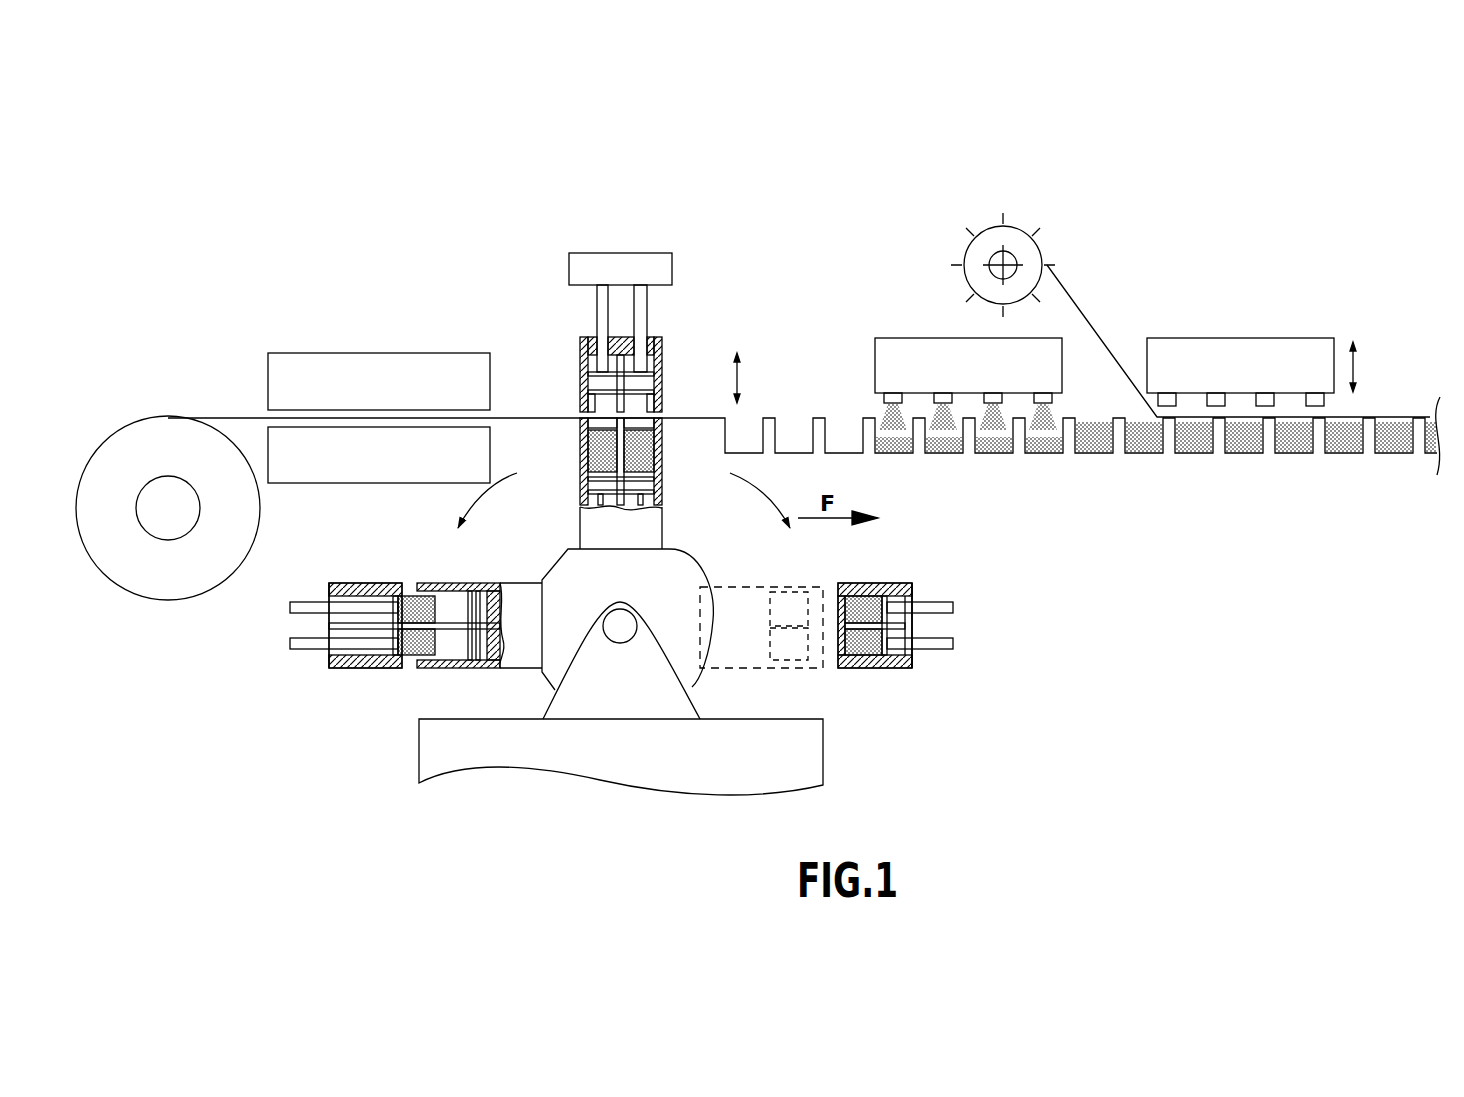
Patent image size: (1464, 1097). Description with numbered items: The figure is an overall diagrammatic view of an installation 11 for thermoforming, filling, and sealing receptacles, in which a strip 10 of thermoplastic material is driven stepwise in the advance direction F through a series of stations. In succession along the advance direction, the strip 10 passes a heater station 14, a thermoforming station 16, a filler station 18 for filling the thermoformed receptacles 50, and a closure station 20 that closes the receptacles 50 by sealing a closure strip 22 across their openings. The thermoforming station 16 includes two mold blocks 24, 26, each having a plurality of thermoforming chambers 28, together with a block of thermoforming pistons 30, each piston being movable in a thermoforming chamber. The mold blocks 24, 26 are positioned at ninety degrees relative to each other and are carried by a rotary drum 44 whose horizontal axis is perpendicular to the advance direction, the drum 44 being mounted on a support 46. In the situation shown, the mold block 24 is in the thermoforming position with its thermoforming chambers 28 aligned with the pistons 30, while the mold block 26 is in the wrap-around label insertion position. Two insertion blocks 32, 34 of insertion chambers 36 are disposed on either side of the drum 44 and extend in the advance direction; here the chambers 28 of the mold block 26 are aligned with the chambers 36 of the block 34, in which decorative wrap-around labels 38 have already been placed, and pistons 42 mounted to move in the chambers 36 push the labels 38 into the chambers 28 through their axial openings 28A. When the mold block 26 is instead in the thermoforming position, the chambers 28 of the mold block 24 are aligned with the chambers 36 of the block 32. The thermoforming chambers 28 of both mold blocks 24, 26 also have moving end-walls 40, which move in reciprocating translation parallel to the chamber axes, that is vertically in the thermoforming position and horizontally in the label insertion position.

The strip of thermoplastic material 10 is at (223, 417).
The packaging system 11 is at (530, 212).
The heater station 14 is at (340, 352).
The thermoforming station 16 is at (672, 253).
The filler station 18 is at (935, 338).
The closure station 20 is at (1232, 338).
The closure strip 22 is at (1087, 318).
The mold block 24 is at (655, 520).
The mold block 26 is at (528, 600).
The thermoforming chambers 28 is at (580, 430).
The axial openings 28A is at (664, 418).
The thermoforming pistons 30 is at (727, 333).
The insertion block 32 is at (905, 582).
The insertion block 34 is at (340, 582).
The insertion chambers 36 is at (352, 582).
The wrap-around labels 38 is at (578, 468).
The moving end-walls 40 is at (490, 668).
The pistons 42 is at (290, 645).
The rotary drum 44 is at (633, 591).
The support 46 is at (810, 762).
The thermoformed receptacles 50 is at (840, 452).